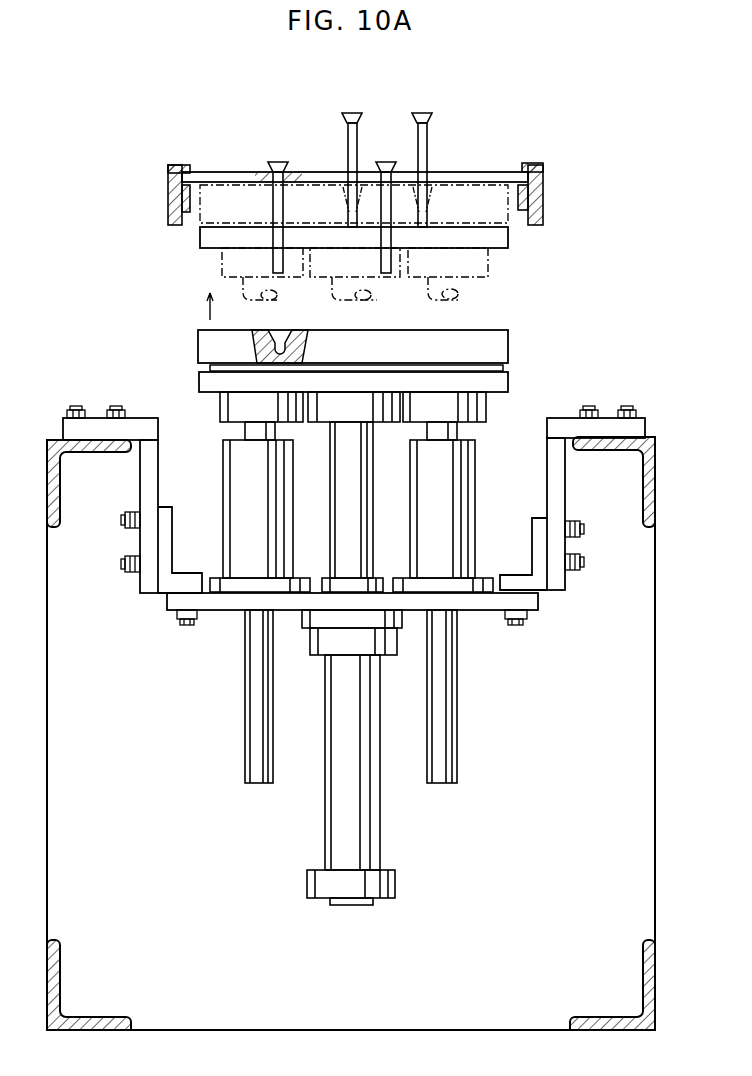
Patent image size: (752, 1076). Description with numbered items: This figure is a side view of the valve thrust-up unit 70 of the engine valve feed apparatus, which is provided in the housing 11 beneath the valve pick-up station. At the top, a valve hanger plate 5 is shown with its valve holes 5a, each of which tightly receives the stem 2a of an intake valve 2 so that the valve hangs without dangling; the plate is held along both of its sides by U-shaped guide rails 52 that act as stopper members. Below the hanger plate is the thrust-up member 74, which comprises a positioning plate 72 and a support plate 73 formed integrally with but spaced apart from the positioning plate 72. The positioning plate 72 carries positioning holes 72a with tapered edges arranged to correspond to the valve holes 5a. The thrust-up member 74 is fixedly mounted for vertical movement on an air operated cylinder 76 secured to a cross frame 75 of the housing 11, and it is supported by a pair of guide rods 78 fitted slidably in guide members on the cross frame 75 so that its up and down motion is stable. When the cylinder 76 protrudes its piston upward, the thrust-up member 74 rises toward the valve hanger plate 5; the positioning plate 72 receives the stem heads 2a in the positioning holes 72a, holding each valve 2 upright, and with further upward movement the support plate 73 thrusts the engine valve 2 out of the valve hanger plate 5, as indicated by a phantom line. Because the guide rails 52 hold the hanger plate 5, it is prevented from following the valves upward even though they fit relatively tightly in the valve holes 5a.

The intake valve 2 is at (277, 163).
The stem 2a is at (278, 200).
The valve hanger plate 5 is at (490, 174).
The valve hole 5a is at (284, 178).
The housing 11 is at (658, 488).
The U-shaped guide rail 52 is at (167, 186).
The valve thrust-up unit 70 is at (572, 300).
The positioning plate 72 is at (203, 210).
The positioning hole 72a is at (286, 335).
The support plate 73 is at (210, 243).
The thrust-up member 74 is at (522, 358).
The cross frame 75 is at (480, 612).
The air operated cylinder 76 is at (375, 838).
The guide rod 78 is at (247, 738).